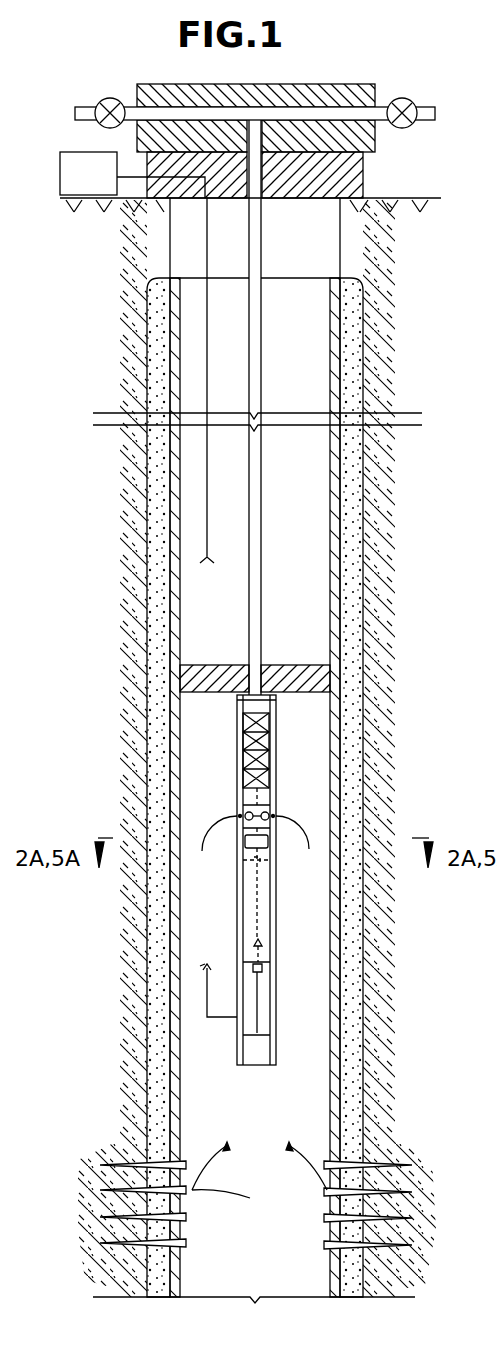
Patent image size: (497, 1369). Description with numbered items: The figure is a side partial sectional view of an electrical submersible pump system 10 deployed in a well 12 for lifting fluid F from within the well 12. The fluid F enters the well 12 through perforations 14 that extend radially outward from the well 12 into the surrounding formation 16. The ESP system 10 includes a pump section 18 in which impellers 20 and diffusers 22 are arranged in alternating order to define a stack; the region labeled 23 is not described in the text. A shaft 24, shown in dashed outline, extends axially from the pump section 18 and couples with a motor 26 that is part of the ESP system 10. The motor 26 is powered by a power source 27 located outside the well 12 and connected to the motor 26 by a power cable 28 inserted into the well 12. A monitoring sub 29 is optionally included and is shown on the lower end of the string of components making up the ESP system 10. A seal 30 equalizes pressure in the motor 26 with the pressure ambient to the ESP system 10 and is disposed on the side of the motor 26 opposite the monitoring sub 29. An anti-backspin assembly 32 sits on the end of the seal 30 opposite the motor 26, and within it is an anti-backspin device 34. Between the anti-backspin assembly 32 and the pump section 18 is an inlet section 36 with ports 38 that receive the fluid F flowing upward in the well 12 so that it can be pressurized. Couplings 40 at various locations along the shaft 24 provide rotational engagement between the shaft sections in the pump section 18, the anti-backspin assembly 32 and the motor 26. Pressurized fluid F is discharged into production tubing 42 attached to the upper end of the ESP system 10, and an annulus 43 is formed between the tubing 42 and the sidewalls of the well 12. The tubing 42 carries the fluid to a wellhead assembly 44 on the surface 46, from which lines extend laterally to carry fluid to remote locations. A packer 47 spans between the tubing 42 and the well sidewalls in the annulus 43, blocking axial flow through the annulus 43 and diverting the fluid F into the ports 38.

The electrical submersible pump system 10 is at (226, 701).
The well 12 is at (260, 1270).
The perforations 14 is at (383, 1153).
The formation 16 is at (393, 1063).
The pump section 18 is at (277, 733).
The impellers 20 is at (237, 727).
The diffusers 22 is at (243, 742).
The housing interior 23 is at (224, 770).
The shaft 24 is at (280, 795).
The motor 26 is at (237, 1018).
The power source 27 is at (108, 190).
The power cable 28 is at (203, 232).
The monitoring sub 29 is at (275, 1048).
The seal 30 is at (237, 878).
The anti-backspin assembly 32 is at (296, 853).
The anti-backspin device 34 is at (277, 842).
The inlet section 36 is at (278, 808).
The ports 38 is at (243, 807).
The couplings 40 is at (262, 943).
The production tubing 42 is at (263, 517).
The annulus 43 is at (300, 359).
The wellhead assembly 44 is at (339, 63).
The surface 46 is at (400, 197).
The packer 47 is at (303, 660).